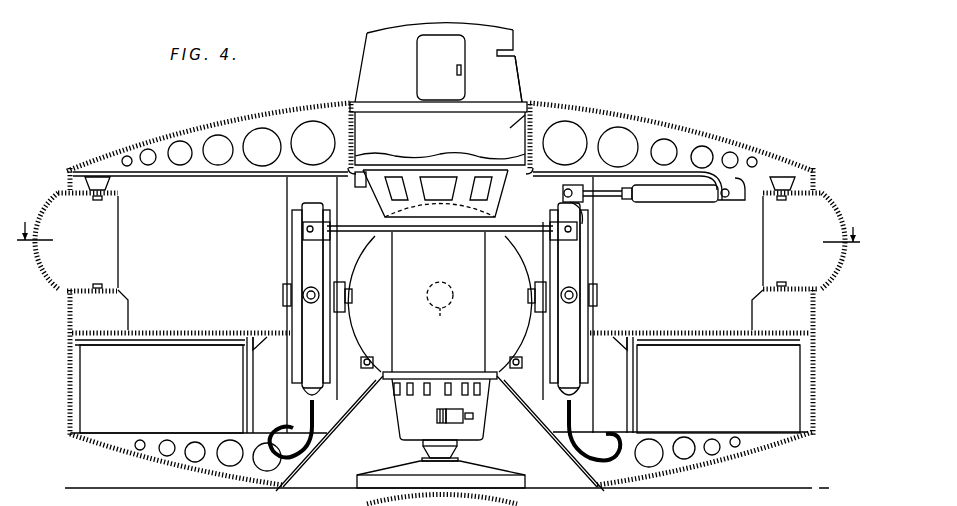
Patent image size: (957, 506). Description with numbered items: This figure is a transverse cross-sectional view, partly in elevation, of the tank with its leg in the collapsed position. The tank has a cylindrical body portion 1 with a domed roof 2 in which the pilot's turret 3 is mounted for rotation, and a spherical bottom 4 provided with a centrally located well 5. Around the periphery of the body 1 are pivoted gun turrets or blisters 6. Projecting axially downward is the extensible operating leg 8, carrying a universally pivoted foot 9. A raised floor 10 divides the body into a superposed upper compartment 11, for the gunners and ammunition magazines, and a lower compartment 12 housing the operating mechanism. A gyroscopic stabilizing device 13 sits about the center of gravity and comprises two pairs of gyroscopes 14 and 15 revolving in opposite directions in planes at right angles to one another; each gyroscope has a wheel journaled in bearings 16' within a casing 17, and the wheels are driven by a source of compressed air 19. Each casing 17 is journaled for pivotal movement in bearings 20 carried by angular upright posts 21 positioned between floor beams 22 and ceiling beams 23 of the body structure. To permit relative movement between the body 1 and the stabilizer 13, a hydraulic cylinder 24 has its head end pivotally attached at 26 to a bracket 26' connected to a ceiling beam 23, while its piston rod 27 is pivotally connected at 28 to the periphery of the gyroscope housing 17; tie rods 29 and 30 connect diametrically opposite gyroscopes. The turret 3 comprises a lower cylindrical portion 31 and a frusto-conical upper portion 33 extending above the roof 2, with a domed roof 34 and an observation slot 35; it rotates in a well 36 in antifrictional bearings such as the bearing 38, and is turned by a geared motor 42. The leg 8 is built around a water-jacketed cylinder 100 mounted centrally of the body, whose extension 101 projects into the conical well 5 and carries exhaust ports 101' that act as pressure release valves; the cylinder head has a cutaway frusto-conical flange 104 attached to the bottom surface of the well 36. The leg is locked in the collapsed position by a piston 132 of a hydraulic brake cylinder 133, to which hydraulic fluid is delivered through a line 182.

The cylindrical body portion 1 is at (820, 332).
The domed roof 2 is at (684, 116).
The pilot's turret 3 is at (360, 66).
The bottom 4 is at (754, 457).
The well 5 is at (323, 494).
The pivoted gun turrets or blisters 6 is at (55, 193).
The extensible operating leg 8 is at (462, 448).
The universally pivoted foot 9 is at (508, 470).
The raised floor 10 is at (180, 332).
The compartment 11 is at (153, 192).
The compartment 12 is at (107, 397).
The gyroscopic stabilizing device 13 is at (287, 267).
The pair of gyroscopes 14 is at (376, 259).
The pair of gyroscopes 15 is at (305, 317).
The bearings 16' is at (536, 307).
The casing 17 is at (298, 250).
The source of compressed air 19 is at (310, 405).
The bearings 20 is at (303, 295).
The angular upright posts 21 is at (297, 192).
The floor beams 22 is at (127, 447).
The ceiling beams 23 is at (227, 130).
The hydraulic cylinder 24 is at (677, 202).
The pivotal attachment 26 is at (732, 207).
The bracket 26' is at (738, 156).
The piston rod 27 is at (613, 202).
The pivotal connection 28 is at (563, 193).
The tie rod 29 is at (430, 229).
The tie rod 30 is at (370, 366).
The lower cylindrical portion 31 is at (550, 107).
The frusto-conical upper portion 33 is at (512, 82).
The domed roof 34 is at (494, 30).
The observation slot 35 is at (514, 55).
The well 36 is at (346, 143).
The antifrictional bearing 38 is at (478, 107).
The geared motor 42 is at (366, 191).
The water jacketed cylinder 100 is at (397, 281).
The extension 101 is at (426, 410).
The exhaust ports 101' is at (417, 403).
The cutaway frusto-conical flange 104 is at (382, 202).
The piston 132 is at (438, 418).
The hydraulic cylinder 133 is at (455, 418).
The line 182 is at (474, 416).